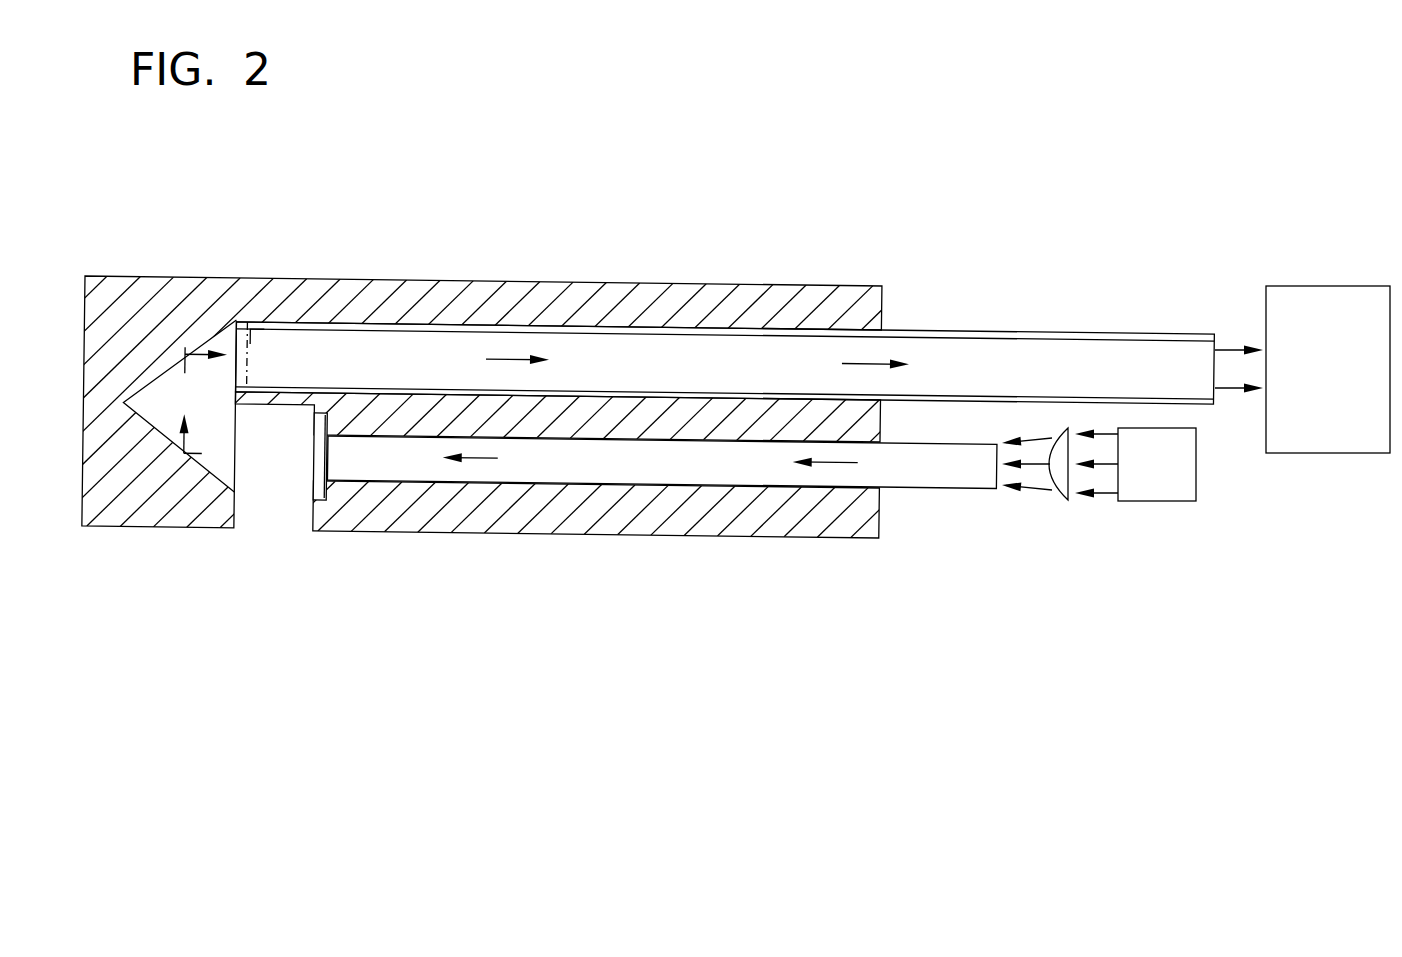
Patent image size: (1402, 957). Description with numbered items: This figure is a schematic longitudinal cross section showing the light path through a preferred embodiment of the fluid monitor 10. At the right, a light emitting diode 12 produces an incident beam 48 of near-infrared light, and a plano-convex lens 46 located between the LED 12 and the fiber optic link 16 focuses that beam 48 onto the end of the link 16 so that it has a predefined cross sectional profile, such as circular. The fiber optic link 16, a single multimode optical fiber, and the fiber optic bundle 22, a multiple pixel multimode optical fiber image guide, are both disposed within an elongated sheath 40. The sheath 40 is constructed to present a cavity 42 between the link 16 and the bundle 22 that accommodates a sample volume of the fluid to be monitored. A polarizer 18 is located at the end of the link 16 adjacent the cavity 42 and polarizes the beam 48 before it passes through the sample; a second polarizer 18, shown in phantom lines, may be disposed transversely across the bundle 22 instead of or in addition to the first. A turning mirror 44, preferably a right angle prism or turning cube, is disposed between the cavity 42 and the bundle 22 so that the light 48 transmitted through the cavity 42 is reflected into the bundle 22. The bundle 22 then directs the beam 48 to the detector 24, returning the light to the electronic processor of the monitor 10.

The fluid monitor 10 is at (762, 200).
The light emitting diode 12 is at (1197, 488).
The fiber optic link 16 is at (933, 487).
The polarizer 18 is at (393, 585).
The fiber optic bundle 22 is at (1025, 328).
The detector 24 is at (1280, 285).
The elongated sheath 40 is at (387, 278).
The cavity 42 is at (289, 460).
The turning mirror 44 is at (213, 333).
The plano-convex lens 46 is at (1057, 493).
The incident beam 48 is at (509, 358).